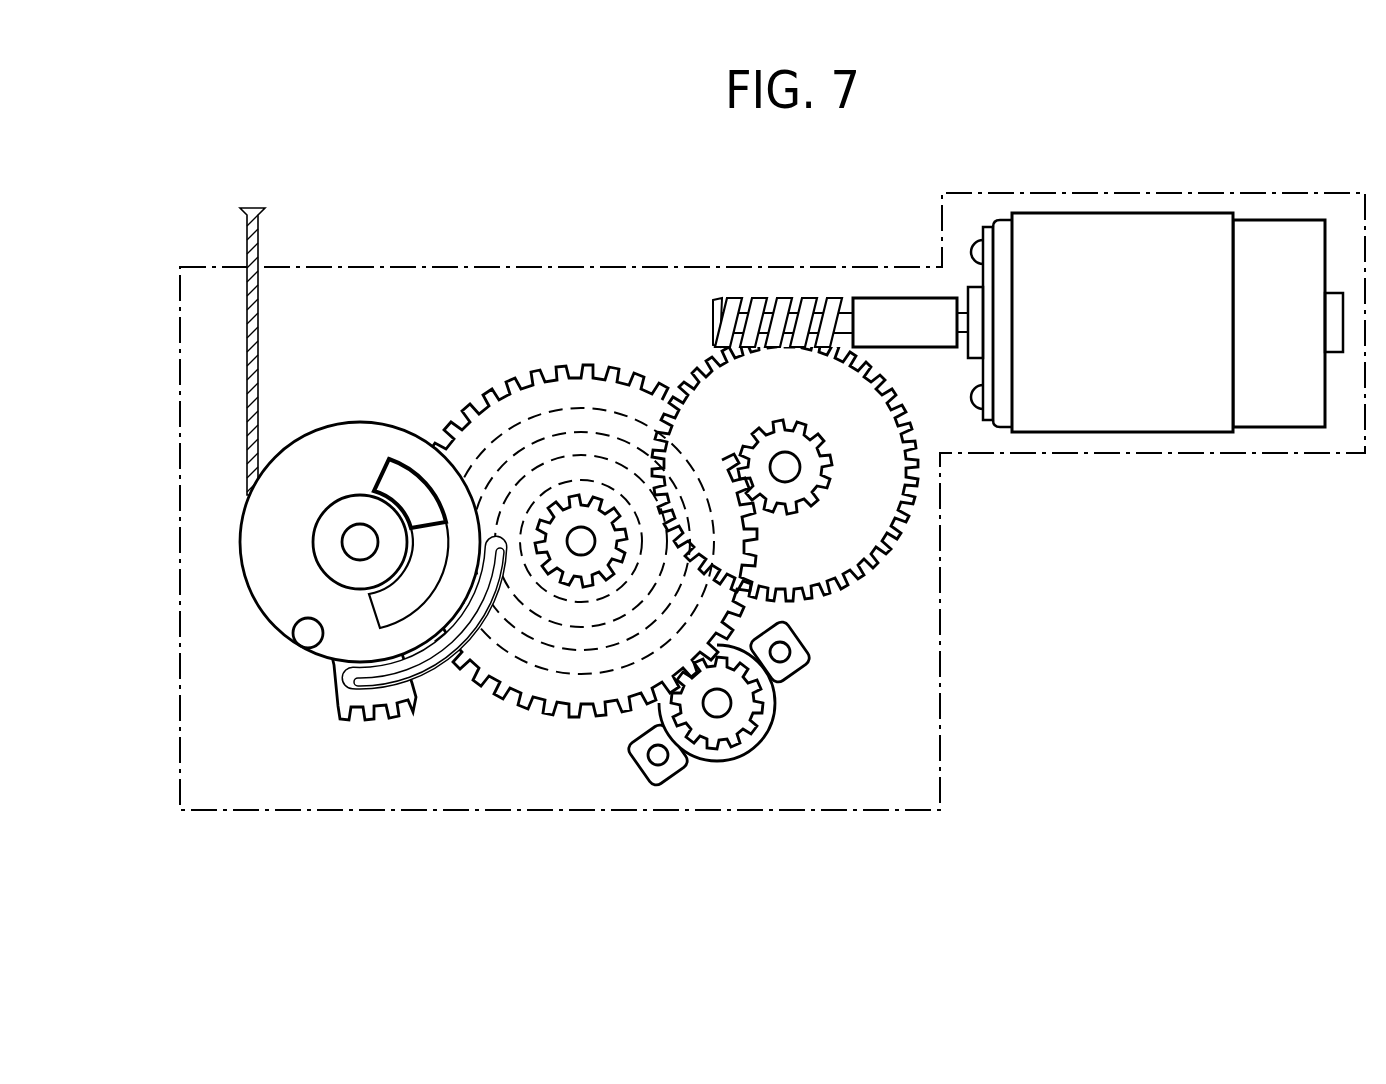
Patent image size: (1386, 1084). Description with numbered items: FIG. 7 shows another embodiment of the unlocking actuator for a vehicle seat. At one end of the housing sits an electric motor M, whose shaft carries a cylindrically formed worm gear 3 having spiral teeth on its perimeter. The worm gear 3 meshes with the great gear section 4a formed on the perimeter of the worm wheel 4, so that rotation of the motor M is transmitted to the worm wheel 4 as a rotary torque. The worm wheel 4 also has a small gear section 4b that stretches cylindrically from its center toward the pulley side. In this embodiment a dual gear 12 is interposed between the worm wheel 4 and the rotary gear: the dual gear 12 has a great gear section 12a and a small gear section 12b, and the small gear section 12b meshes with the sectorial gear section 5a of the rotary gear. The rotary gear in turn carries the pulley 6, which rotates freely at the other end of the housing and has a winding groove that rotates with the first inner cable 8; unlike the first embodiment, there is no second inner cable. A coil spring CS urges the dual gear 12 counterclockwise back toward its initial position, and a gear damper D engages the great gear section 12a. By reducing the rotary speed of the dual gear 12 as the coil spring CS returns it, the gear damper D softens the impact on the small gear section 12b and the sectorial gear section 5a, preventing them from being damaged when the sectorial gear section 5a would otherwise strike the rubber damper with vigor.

The worm gear 3 is at (785, 305).
The worm wheel 4 is at (854, 480).
The great gear section 4a is at (917, 472).
The small gear section 4b is at (822, 497).
The sectorial gear section 5a is at (403, 712).
The pulley 6 is at (278, 570).
The first inner cable 8 is at (258, 322).
The dual gear 12 is at (581, 537).
The great gear section 12a is at (582, 372).
The small gear section 12b is at (568, 598).
The coil spring CS is at (585, 590).
The gear damper D is at (740, 712).
The motor M is at (1148, 402).